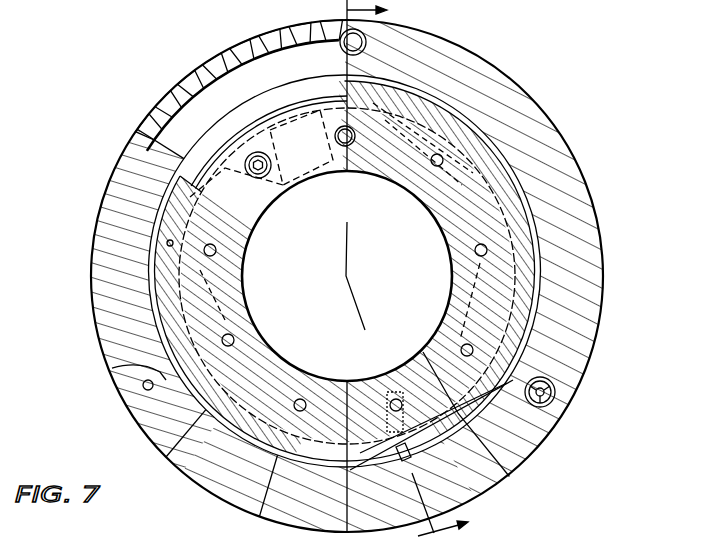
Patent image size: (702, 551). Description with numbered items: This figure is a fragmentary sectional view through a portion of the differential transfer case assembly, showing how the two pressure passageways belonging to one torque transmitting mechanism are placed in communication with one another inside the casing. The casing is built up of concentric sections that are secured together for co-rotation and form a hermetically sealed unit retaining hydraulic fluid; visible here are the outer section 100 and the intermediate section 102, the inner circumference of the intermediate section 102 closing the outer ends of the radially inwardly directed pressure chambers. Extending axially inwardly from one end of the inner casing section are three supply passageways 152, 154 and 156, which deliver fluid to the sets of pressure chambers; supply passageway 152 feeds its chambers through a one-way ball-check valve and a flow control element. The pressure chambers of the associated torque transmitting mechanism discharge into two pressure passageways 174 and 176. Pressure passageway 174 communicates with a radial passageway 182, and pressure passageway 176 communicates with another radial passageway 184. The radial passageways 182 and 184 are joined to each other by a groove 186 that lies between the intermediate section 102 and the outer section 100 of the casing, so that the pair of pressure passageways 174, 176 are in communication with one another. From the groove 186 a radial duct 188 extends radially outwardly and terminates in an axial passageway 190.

The outer section 100 is at (597, 353).
The intermediate section 102 is at (530, 247).
The supply passageway 152 is at (361, 170).
The supply passageway 154 is at (462, 347).
The supply passageway 156 is at (234, 338).
The pressure passageway 174 is at (305, 400).
The pressure passageway 176 is at (217, 250).
The radial passageway 182 is at (259, 517).
The radial passageway 184 is at (104, 257).
The groove 186 is at (166, 457).
The radial duct 188 is at (140, 367).
The axial passageway 190 is at (143, 388).